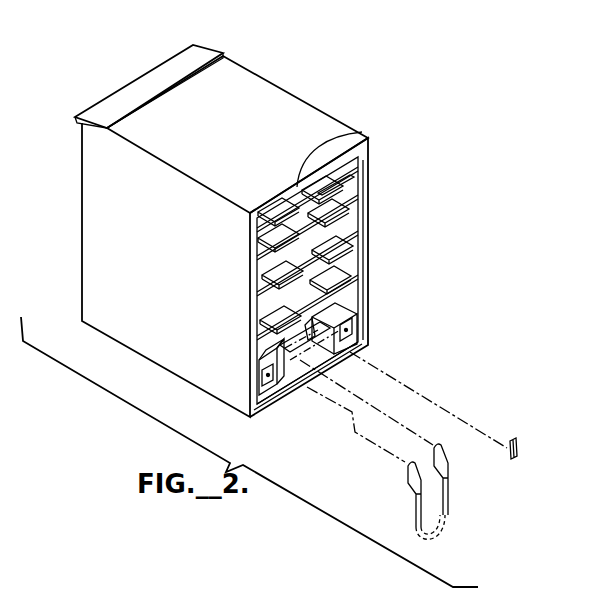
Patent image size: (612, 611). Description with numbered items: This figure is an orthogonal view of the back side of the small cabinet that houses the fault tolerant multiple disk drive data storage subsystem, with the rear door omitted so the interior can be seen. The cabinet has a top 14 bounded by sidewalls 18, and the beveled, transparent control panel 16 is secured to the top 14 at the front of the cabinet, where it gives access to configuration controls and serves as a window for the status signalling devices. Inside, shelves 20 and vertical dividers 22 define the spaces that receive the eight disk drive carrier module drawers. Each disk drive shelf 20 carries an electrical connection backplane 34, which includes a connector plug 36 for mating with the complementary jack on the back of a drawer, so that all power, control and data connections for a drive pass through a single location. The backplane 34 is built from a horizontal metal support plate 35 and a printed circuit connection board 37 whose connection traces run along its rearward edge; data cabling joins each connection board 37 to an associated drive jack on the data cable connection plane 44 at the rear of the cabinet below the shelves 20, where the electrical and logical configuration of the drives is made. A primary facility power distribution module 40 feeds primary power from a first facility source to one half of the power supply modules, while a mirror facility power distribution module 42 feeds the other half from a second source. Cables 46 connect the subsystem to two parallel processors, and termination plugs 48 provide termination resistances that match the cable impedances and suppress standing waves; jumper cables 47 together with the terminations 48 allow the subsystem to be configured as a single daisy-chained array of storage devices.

The top 14 is at (237, 236).
The control panel 16 is at (200, 53).
The sidewalls 18 is at (103, 280).
The shelves 20 is at (322, 190).
The vertical dividers 22 is at (347, 137).
The electrical connection backplane 34 is at (340, 177).
The horizontal metal support plate 35 is at (350, 297).
The connector plug 36 is at (266, 318).
The printed circuit connection board 37 is at (338, 247).
The primary facility power distribution module 40 is at (262, 360).
The mirror facility power distribution module 42 is at (342, 316).
The data cable connection plane 44 is at (303, 345).
The cables 46 is at (449, 495).
The jumper cables 47 is at (437, 543).
The termination plugs 48 is at (520, 446).